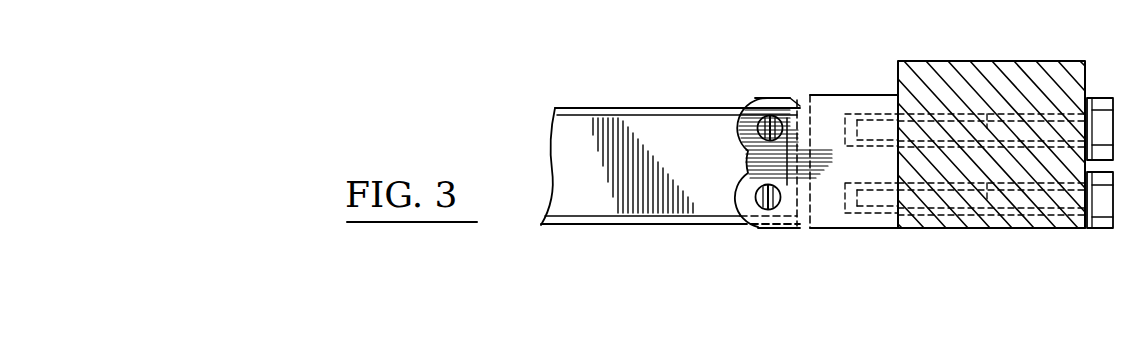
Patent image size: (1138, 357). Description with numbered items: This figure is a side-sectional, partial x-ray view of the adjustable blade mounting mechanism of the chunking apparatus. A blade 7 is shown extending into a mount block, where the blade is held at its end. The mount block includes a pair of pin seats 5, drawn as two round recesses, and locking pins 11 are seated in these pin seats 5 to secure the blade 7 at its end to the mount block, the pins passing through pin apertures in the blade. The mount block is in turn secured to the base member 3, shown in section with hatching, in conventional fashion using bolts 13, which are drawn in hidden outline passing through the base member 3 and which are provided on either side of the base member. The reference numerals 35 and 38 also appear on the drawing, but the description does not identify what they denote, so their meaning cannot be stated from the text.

The base member 3 is at (1002, 145).
The pin seats 5 is at (748, 195).
The blades 7 is at (697, 163).
The locking pins 11 is at (771, 188).
The bolts 13 is at (1100, 163).
The insulating block 35 is at (986, 61).
The base plate 38 is at (955, 228).